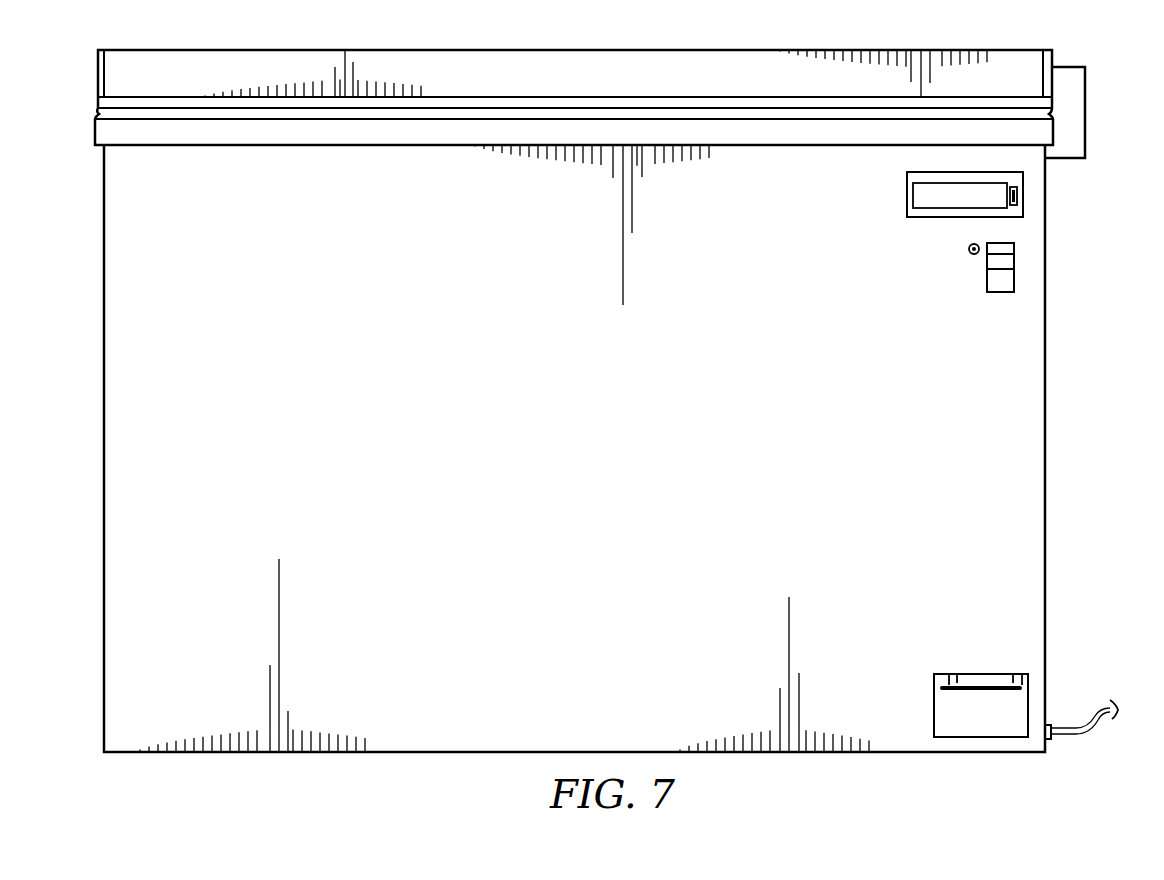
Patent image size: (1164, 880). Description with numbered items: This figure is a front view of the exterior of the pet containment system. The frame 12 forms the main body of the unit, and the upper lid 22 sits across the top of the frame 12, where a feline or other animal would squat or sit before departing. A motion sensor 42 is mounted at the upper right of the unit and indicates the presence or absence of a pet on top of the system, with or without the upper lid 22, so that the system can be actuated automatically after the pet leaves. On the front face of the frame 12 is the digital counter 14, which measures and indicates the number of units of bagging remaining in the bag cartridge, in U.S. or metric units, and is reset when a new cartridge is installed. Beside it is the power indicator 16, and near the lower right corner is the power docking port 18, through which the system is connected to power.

The frame 12 is at (620, 476).
The digital counter 14 is at (907, 185).
The power indicator 16 is at (978, 259).
The power docking port 18 is at (934, 697).
The upper lid 22 is at (465, 50).
The motion sensor 42 is at (1085, 100).